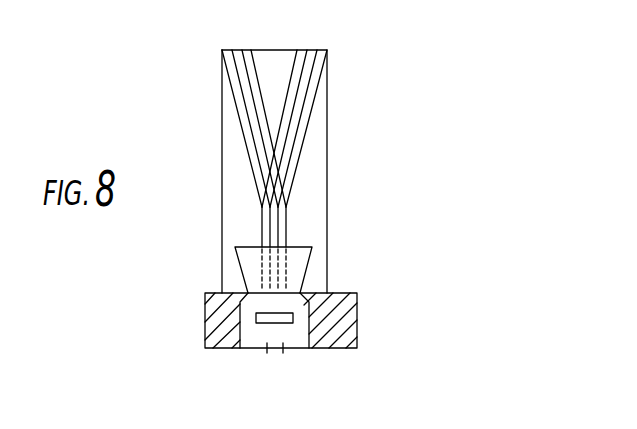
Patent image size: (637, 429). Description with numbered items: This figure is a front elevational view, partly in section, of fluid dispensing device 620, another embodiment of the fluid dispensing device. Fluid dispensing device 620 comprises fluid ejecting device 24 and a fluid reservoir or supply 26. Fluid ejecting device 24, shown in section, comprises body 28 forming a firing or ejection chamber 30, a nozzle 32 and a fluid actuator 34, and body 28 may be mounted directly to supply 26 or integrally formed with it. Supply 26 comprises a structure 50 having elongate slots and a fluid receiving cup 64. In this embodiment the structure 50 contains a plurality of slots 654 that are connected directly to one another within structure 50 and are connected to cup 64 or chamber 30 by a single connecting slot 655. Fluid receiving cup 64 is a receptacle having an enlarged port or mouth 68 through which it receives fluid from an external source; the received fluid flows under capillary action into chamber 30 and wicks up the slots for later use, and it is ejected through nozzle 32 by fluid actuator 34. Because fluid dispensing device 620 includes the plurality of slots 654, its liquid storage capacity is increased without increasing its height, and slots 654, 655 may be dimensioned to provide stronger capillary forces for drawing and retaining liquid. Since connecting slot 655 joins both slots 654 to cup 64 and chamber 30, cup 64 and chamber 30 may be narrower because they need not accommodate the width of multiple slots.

The fluid supply 26 is at (342, 63).
The structure 50 is at (328, 110).
The fluid dispensing device 620 is at (190, 158).
The slots 654 is at (300, 155).
The connecting slot 655 is at (288, 215).
The mouth 68 is at (312, 247).
The fluid receiving cup 64 is at (233, 236).
The fluid ejecting device 24 is at (364, 301).
The body 28 is at (205, 313).
The ejection chamber 30 is at (298, 325).
The fluid actuator 34 is at (288, 324).
The nozzle 32 is at (277, 350).